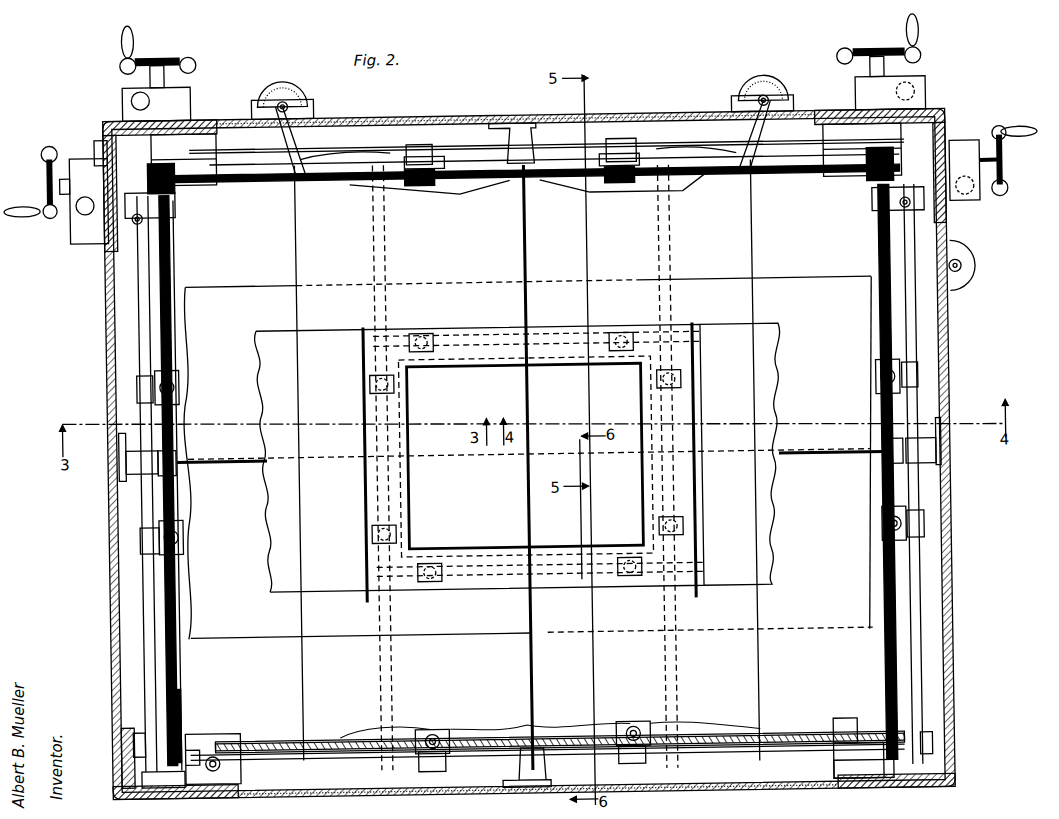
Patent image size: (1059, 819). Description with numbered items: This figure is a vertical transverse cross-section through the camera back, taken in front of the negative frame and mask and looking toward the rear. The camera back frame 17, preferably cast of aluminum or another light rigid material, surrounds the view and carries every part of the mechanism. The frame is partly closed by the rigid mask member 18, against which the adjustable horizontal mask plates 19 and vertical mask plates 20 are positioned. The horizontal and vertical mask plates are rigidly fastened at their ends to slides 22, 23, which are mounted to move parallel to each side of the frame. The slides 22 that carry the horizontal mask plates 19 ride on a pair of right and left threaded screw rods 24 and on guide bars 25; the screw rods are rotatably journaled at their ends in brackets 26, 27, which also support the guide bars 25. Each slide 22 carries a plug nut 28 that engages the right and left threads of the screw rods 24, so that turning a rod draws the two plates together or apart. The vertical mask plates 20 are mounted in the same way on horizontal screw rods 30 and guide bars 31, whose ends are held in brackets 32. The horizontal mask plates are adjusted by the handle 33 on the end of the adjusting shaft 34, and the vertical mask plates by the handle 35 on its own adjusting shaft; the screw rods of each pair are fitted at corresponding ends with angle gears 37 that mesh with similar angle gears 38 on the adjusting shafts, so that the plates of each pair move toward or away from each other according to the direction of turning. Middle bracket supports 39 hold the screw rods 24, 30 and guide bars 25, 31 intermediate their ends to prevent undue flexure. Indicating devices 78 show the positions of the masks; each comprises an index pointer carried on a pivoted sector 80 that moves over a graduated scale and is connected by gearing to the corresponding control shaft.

The camera back frame 17 is at (110, 277).
The rigid mask member 18 is at (338, 329).
The horizontal mask plate 19 is at (236, 291).
The vertical mask plate 20 is at (299, 226).
The slide 22 is at (162, 323).
The slide 23 is at (474, 192).
The screw rod 24 is at (166, 345).
The guide bar 25 is at (141, 493).
The bracket 26 is at (162, 211).
The bracket 27 is at (137, 773).
The plug nut 28 is at (182, 391).
The horizontal screw rod 30 is at (463, 165).
The guide bar 31 is at (604, 145).
The bracket 32 is at (227, 128).
The handle 33 is at (51, 200).
The adjusting shaft 34 is at (255, 178).
The handle 35 is at (190, 58).
The angle gear 37 is at (180, 185).
The angle gear 38 is at (114, 142).
The middle bracket support 39 is at (527, 140).
The indicating device 78 is at (305, 101).
The pivoted sector 80 is at (301, 135).